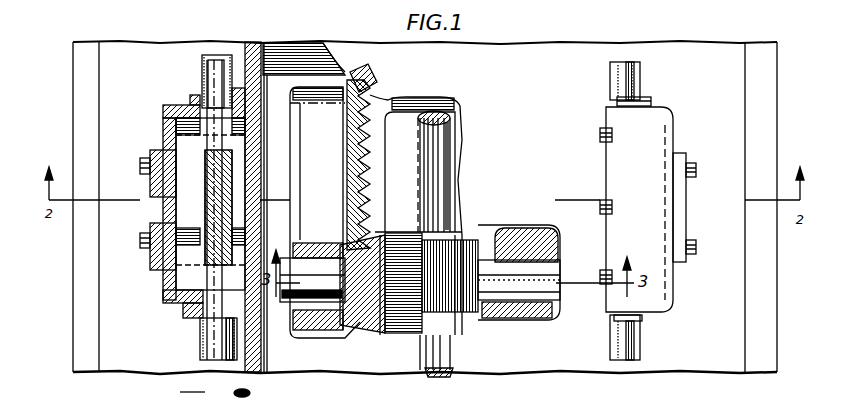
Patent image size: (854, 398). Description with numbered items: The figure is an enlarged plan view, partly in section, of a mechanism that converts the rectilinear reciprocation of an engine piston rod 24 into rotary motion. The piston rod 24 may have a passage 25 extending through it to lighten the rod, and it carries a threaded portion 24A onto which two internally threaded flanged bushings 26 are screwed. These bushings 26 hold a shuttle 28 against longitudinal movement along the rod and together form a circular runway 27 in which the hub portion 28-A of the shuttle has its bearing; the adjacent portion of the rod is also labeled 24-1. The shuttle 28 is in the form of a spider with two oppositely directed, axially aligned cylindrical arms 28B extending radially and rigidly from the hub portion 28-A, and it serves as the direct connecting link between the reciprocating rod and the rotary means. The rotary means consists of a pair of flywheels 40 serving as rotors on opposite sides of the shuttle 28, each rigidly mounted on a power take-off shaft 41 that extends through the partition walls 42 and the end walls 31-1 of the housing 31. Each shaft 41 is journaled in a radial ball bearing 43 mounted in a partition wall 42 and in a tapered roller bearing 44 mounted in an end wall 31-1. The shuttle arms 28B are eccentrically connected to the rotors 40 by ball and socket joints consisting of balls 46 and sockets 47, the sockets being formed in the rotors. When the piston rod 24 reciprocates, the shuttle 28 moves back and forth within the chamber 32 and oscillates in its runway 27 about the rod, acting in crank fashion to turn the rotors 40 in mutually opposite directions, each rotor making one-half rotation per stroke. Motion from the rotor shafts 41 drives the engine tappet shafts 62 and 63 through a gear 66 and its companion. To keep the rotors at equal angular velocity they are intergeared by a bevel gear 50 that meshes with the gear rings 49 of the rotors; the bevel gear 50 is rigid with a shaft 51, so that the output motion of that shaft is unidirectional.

The piston rod 24 is at (452, 151).
The shaft bore 24-1 is at (430, 178).
The threaded portion 24A is at (398, 238).
The passage 25 is at (438, 377).
The flanged bushings 26 is at (462, 212).
The circular runway 27 is at (385, 200).
The shuttle 28 is at (348, 250).
The hub portion 28-A is at (428, 268).
The cylindrical arms 28B is at (420, 280).
The housing 31 is at (389, 139).
The end walls 31-1 is at (162, 110).
The chamber 32 is at (277, 211).
The flywheels 40 is at (540, 349).
The power take-off shafts 41 is at (196, 205).
The partition walls 42 is at (243, 104).
The radial ball bearings 43 is at (218, 246).
The tapered roller bearings 44 is at (162, 228).
The balls 46 is at (330, 243).
The sockets 47 is at (318, 243).
The gear rings 49 is at (370, 128).
The bevel gear 50 is at (356, 86).
The shaft 51 is at (203, 391).
The tappet shaft 62 is at (210, 279).
The tappet shaft 63 is at (640, 334).
The gear 66 is at (262, 207).